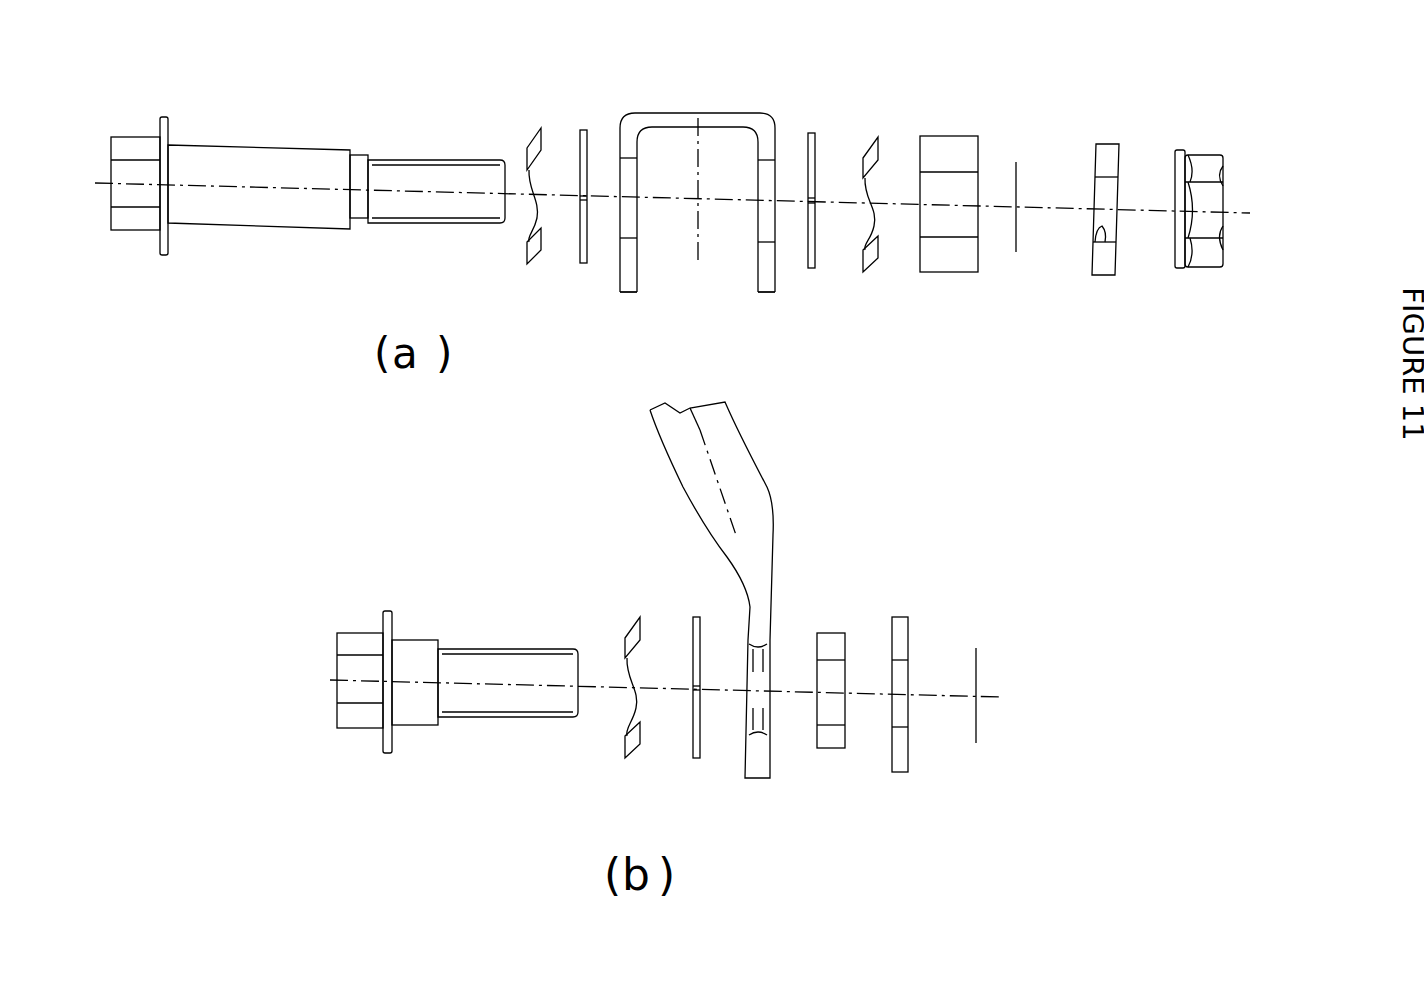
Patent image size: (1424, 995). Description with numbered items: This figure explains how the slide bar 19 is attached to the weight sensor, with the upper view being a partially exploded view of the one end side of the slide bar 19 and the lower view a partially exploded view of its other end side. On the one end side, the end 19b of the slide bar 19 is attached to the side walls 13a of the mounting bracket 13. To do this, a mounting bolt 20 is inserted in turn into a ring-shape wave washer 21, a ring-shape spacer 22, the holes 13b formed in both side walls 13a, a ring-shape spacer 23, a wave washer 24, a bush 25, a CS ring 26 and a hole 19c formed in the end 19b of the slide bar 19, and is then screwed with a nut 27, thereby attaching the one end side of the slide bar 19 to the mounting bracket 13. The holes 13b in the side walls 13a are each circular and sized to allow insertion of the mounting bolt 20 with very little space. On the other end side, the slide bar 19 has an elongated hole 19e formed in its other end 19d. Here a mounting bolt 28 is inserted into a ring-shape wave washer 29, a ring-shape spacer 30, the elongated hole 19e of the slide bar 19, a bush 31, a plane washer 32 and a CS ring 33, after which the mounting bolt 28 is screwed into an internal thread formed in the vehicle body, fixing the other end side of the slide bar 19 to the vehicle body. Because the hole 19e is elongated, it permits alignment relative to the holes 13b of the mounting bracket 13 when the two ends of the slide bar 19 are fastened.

The mounting bracket 13 is at (697, 160).
The side walls 13a is at (632, 275).
The holes 13b is at (626, 158).
The slide bar 19 is at (750, 640).
The end 19b is at (1104, 155).
The hole 19c is at (1095, 226).
The other end 19d is at (761, 778).
The elongated hole 19e is at (745, 720).
The mounting bolt 20 is at (271, 163).
The ring-shape wave washer 21 is at (533, 140).
The ring-shape spacer 22 is at (585, 130).
The ring-shape spacer 23 is at (808, 140).
The wave washer 24 is at (871, 165).
The bush 25 is at (955, 150).
The CS ring 26 is at (1018, 178).
The nut 27 is at (1202, 170).
The mounting bolt 28 is at (480, 660).
The ring-shape wave washer 29 is at (633, 632).
The ring-shape spacer 30 is at (696, 640).
The bush 31 is at (828, 735).
The plane washer 32 is at (903, 628).
The CS ring 33 is at (975, 728).